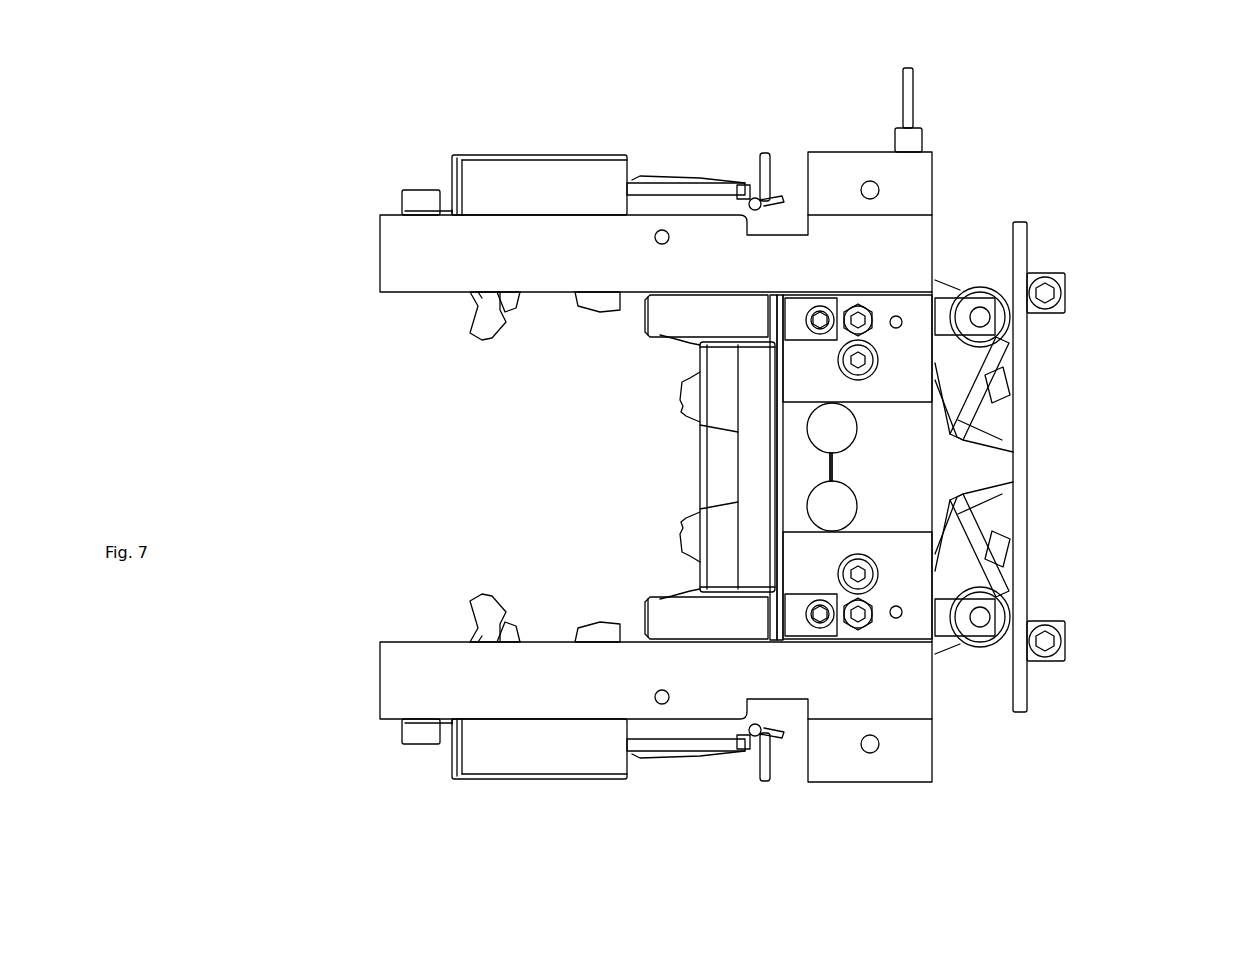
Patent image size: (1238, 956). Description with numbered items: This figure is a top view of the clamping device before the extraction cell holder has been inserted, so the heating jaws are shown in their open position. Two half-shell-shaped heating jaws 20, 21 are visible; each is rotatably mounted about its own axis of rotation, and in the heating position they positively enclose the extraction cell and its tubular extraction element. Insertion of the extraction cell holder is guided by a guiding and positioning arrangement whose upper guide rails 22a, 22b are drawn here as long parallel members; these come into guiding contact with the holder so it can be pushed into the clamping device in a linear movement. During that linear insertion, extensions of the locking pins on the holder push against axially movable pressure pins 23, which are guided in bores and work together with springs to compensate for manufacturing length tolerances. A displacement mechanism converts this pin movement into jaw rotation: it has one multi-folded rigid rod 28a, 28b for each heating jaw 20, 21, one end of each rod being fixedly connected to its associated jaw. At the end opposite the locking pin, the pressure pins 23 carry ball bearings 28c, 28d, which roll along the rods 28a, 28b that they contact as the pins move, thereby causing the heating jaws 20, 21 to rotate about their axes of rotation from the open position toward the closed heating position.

The heating jaw 20 is at (485, 318).
The heating jaw 21 is at (480, 612).
The upper guide rail 22a is at (413, 245).
The upper guide rail 22b is at (413, 665).
The pressure pin 23 is at (937, 310).
The multi-folded rigid rod 28a is at (972, 398).
The multi-folded rigid rod 28b is at (975, 522).
The ball bearing 28c is at (1012, 598).
The ball bearing 28d is at (1002, 280).